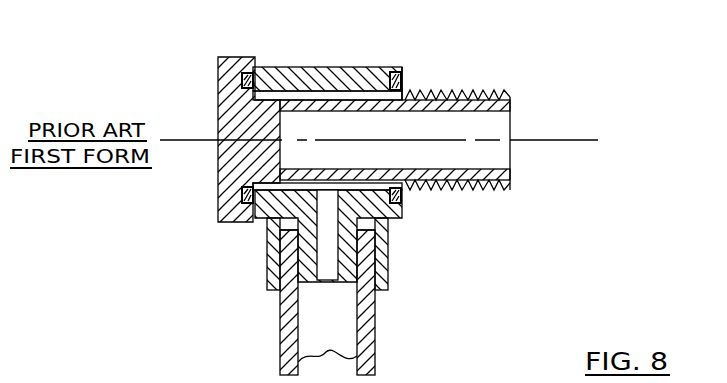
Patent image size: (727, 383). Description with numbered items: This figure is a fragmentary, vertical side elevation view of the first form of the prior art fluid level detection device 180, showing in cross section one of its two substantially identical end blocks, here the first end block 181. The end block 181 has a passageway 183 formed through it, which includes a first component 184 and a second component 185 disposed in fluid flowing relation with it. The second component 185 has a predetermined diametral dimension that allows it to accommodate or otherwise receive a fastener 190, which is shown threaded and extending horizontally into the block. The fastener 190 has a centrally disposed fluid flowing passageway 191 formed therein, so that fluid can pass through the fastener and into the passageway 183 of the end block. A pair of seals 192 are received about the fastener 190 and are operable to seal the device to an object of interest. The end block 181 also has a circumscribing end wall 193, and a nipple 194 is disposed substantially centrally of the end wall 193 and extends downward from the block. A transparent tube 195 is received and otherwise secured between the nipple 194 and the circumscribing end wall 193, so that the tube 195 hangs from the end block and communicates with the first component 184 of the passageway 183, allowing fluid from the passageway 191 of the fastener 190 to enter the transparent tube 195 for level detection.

The first form of prior art fluid level detection device 180 is at (346, 141).
The first end block 181 is at (278, 66).
The passageway 183 is at (340, 92).
The first component 184 is at (335, 216).
The second component 185 is at (398, 66).
The fastener 190 is at (230, 150).
The fluid flowing passageway 191 is at (462, 127).
The seals 192 is at (248, 74).
The circumscribing end wall 193 is at (388, 260).
The nipple 194 is at (292, 262).
The transparent tube 195 is at (372, 320).